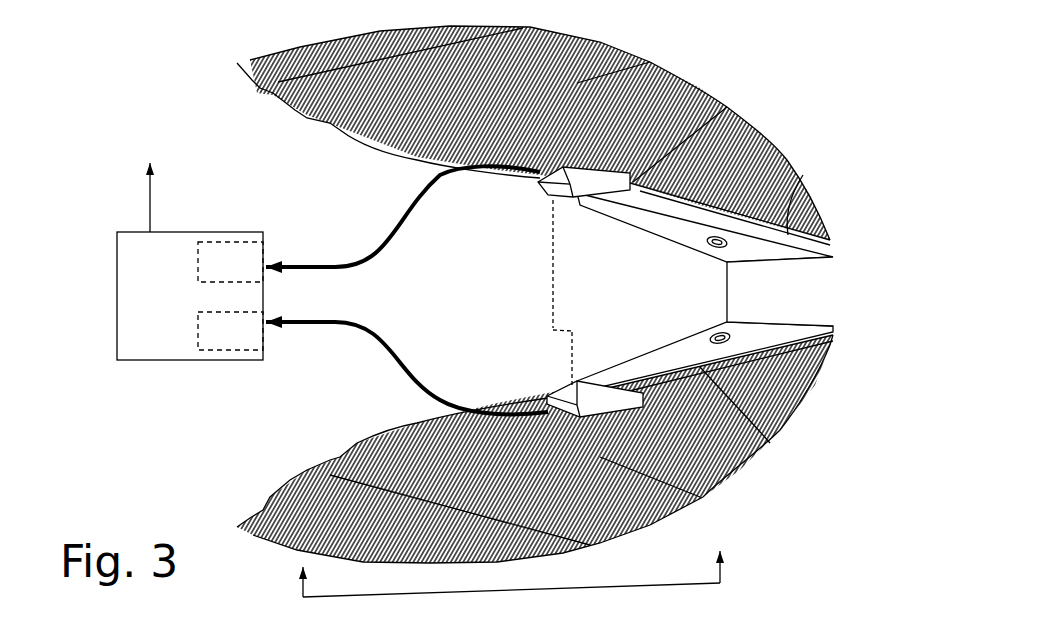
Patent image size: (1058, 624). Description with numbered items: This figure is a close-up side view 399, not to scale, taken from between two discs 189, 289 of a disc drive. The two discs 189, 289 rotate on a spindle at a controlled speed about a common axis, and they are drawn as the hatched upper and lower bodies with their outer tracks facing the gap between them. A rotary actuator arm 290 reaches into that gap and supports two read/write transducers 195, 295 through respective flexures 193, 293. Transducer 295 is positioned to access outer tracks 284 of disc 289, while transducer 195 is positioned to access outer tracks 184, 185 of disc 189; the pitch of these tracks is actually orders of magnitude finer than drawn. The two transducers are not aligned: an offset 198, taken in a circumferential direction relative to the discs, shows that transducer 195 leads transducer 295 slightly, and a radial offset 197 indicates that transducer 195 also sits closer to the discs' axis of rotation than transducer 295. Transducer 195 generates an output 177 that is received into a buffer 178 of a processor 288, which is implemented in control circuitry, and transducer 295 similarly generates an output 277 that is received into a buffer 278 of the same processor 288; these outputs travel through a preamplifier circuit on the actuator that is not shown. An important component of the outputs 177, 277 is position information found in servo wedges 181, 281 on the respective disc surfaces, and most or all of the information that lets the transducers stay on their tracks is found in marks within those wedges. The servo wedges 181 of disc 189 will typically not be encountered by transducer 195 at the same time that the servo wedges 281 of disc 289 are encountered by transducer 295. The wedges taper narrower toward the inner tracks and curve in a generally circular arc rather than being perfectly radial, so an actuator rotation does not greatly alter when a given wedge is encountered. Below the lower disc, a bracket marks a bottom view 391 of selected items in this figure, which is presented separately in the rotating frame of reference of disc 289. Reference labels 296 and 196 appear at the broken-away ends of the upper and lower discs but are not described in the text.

The side view 399 is at (847, 54).
The servo wedges 281 is at (534, 27).
The outer tracks 284 is at (807, 175).
The upper structure 296 is at (295, 128).
The disc 289 is at (348, 133).
The read/write transducer 295 is at (547, 182).
The flexure 293 is at (630, 212).
The rotary actuator arm 290 is at (797, 304).
The flexure 193 is at (647, 362).
The read/write transducer 195 is at (561, 397).
The radial offset 197 is at (598, 324).
The offset 198 is at (597, 347).
The servo wedges 181 is at (605, 545).
The outer track 184 is at (821, 385).
The outer track 185 is at (791, 428).
The disc 189 is at (350, 460).
The lower structure 196 is at (297, 462).
The processor 288 is at (165, 311).
The buffer 278 is at (252, 277).
The buffer 178 is at (252, 347).
The output 277 is at (403, 216).
The output 177 is at (407, 368).
The bottom view 391 is at (513, 582).